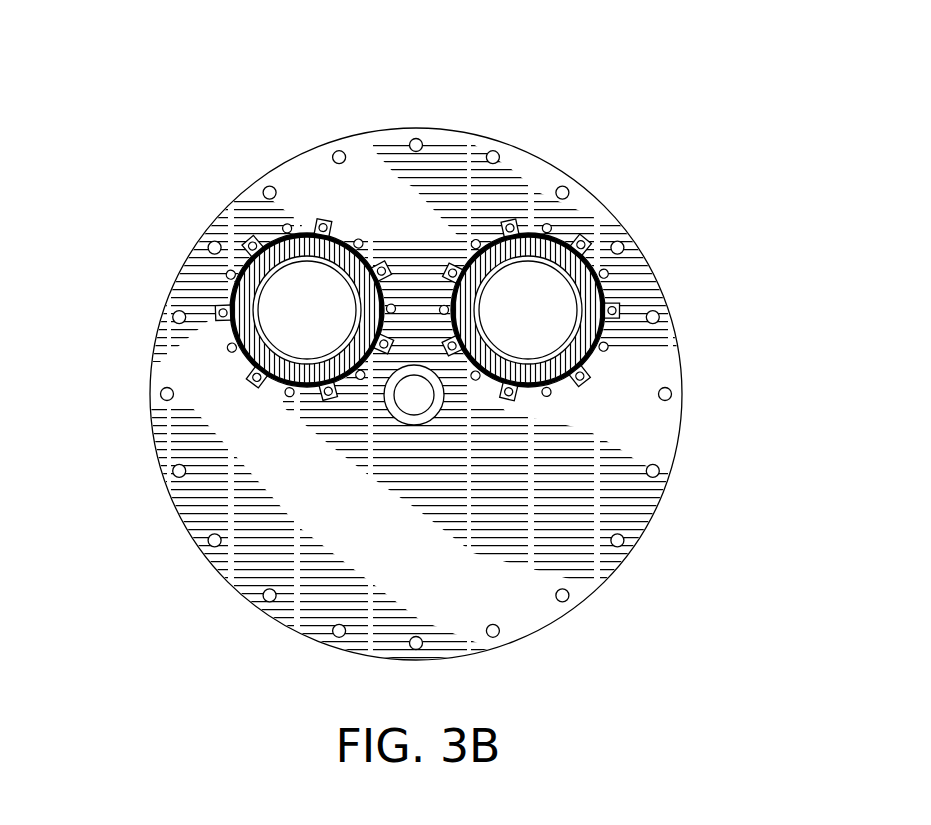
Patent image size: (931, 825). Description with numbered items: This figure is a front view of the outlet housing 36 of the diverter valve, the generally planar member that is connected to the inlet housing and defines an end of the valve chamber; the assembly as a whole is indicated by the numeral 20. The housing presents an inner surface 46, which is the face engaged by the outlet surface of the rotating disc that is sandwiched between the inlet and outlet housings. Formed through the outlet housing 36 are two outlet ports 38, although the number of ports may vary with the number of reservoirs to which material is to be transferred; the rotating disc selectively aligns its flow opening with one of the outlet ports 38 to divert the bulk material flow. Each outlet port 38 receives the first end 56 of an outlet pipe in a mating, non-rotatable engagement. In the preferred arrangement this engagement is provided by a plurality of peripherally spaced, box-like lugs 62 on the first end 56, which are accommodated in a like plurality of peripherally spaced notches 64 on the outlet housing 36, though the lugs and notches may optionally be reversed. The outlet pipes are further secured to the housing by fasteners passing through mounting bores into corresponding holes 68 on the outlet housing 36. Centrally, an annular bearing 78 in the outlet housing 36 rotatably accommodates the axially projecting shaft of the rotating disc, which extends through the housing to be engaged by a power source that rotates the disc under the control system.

The cover assembly 20 is at (346, 118).
The outlet housing 36 is at (660, 362).
The outlet ports 38 is at (320, 323).
The inner surface 46 is at (406, 545).
The first end 56 is at (251, 243).
The box-like lugs 62 is at (333, 232).
The notches 64 is at (324, 400).
The holes 68 is at (285, 397).
The annular bearing 78 is at (423, 413).